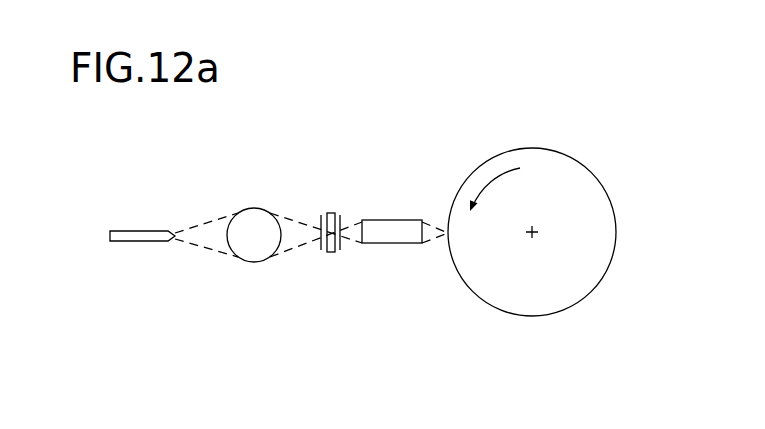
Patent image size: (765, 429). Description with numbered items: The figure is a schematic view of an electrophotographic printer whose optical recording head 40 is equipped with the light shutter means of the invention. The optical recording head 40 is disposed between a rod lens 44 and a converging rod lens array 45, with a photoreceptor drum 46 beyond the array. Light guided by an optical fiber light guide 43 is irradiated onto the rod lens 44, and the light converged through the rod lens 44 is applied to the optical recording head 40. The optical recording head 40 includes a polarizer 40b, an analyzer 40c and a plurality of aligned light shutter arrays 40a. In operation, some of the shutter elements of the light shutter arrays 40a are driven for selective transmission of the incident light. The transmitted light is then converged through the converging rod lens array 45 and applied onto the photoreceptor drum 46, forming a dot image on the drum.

The optical recording head 40 is at (352, 247).
The light shutter arrays 40a is at (331, 252).
The polarizer 40b is at (321, 252).
The analyzer 40c is at (340, 250).
The optical fiber light guide 43 is at (135, 242).
The rod lens 44 is at (245, 262).
The converging rod lens array 45 is at (398, 244).
The photoreceptor drum 46 is at (545, 314).